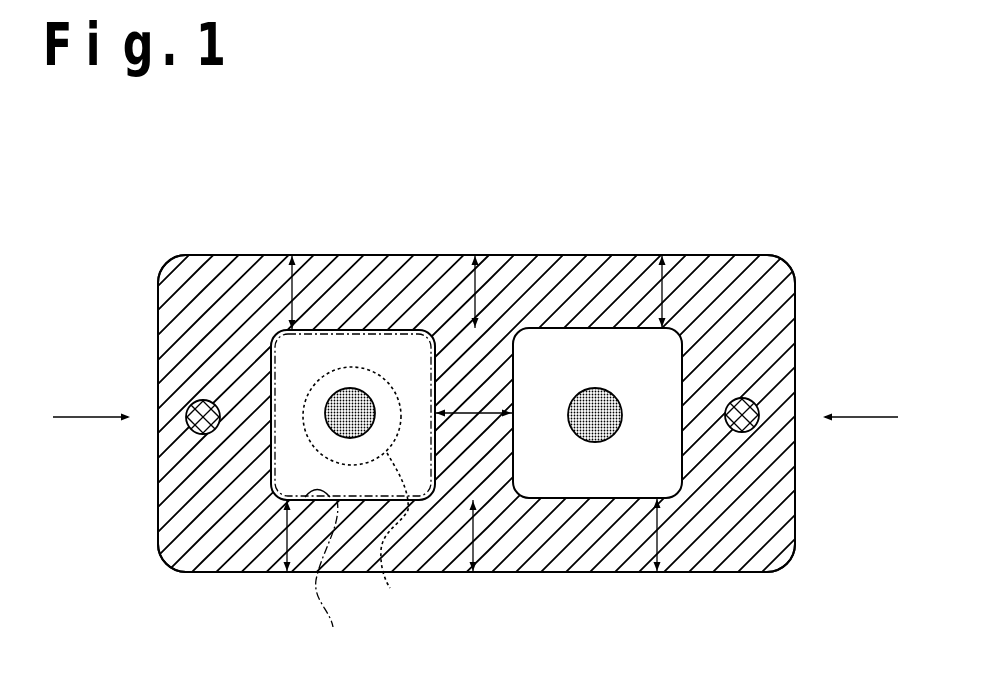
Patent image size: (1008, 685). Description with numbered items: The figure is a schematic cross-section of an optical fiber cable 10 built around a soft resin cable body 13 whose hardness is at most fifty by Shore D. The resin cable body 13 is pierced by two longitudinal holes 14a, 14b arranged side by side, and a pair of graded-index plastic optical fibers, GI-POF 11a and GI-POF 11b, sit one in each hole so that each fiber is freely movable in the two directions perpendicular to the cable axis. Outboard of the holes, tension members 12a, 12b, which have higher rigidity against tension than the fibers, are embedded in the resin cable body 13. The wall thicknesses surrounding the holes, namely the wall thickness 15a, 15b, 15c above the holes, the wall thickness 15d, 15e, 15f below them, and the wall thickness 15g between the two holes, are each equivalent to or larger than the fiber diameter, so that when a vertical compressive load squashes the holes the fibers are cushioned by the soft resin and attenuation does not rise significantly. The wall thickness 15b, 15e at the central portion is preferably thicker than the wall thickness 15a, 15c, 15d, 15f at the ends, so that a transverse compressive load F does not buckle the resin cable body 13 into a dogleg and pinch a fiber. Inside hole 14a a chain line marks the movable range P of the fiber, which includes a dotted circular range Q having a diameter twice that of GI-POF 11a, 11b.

The cable 10 is at (830, 242).
The GI-POF 11a is at (353, 388).
The GI-POF 11b is at (597, 390).
The tension member 12a is at (188, 426).
The tension member 12b is at (757, 427).
The resin cable body 13 is at (783, 378).
The hole 14a is at (288, 377).
The hole 14b is at (667, 365).
The wall thickness 15a is at (292, 303).
The wall thickness 15b is at (475, 290).
The wall thickness 15c is at (667, 290).
The wall thickness 15d is at (287, 538).
The wall thickness 15e is at (475, 538).
The wall thickness 15f is at (657, 537).
The wall thickness 15g is at (481, 417).
The movable range P is at (327, 575).
The circular range Q is at (395, 540).
The compressive load F is at (475, 436).